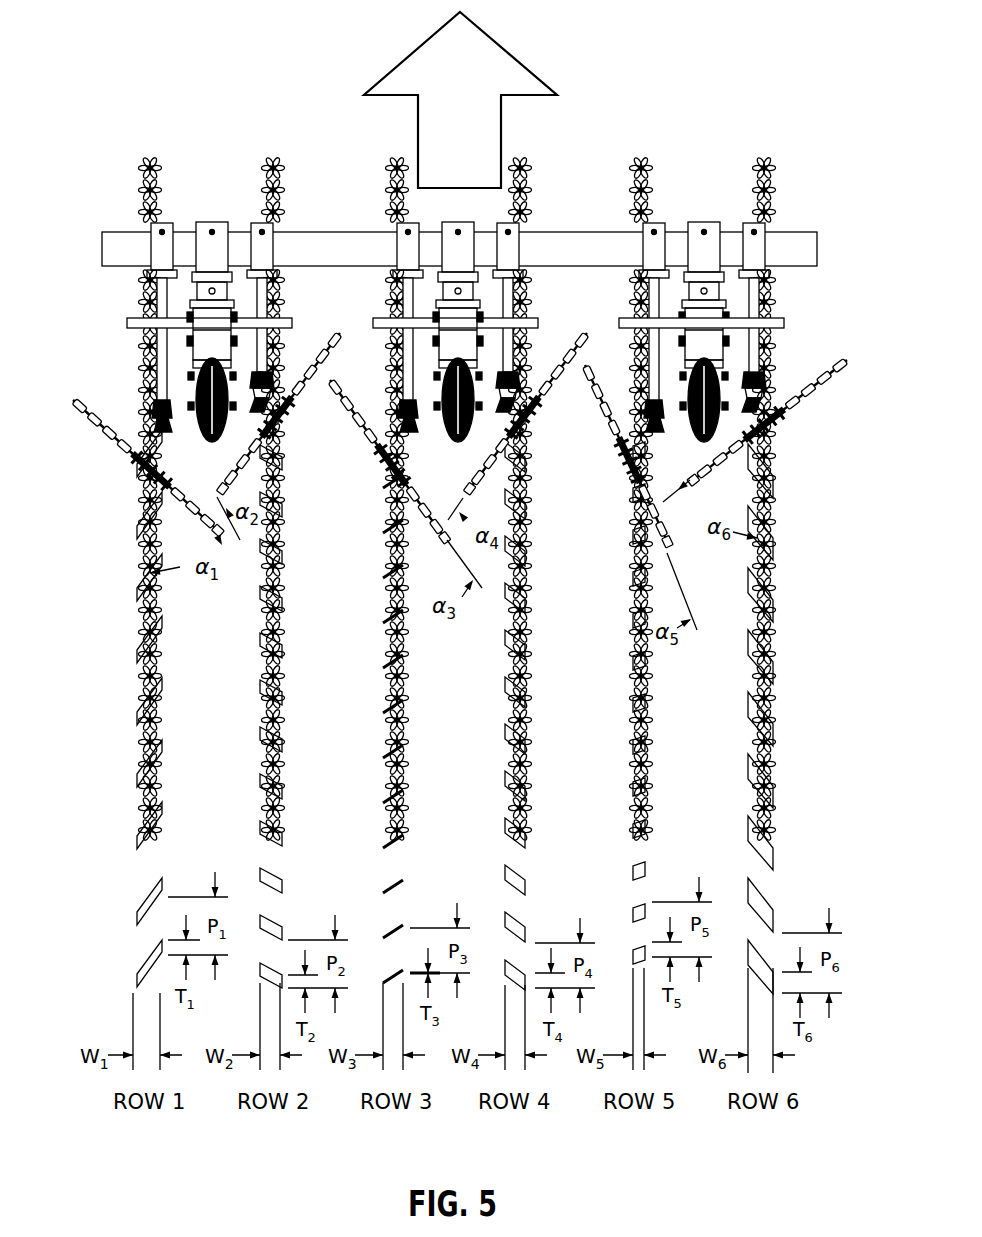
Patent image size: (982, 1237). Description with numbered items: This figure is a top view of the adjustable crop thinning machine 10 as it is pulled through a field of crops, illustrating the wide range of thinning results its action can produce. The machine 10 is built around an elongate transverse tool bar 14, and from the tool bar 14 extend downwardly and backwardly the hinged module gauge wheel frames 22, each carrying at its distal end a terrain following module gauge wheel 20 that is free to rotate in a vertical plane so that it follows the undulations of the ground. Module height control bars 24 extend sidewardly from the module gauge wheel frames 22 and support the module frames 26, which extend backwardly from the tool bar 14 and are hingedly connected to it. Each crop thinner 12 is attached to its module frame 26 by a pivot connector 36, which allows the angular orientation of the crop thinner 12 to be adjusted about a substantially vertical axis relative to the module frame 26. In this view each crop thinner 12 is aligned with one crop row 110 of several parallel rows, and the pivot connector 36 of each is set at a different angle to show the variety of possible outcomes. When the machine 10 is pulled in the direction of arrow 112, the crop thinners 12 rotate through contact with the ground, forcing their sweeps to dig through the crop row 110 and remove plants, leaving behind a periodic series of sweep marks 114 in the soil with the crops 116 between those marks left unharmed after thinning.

The thinning machine 10 is at (610, 113).
The crop thinner 12 is at (797, 427).
The tool bar 14 is at (792, 247).
The module gauge wheel 20 is at (197, 380).
The module gauge wheel frame 22 is at (200, 345).
The module height control bar 24 is at (775, 323).
The module frame 26 is at (752, 297).
The pivot connector 36 is at (278, 340).
The crop row 110 is at (140, 640).
The arrow 112 is at (432, 65).
The sweep mark 114 is at (530, 765).
The crop 116 is at (505, 766).